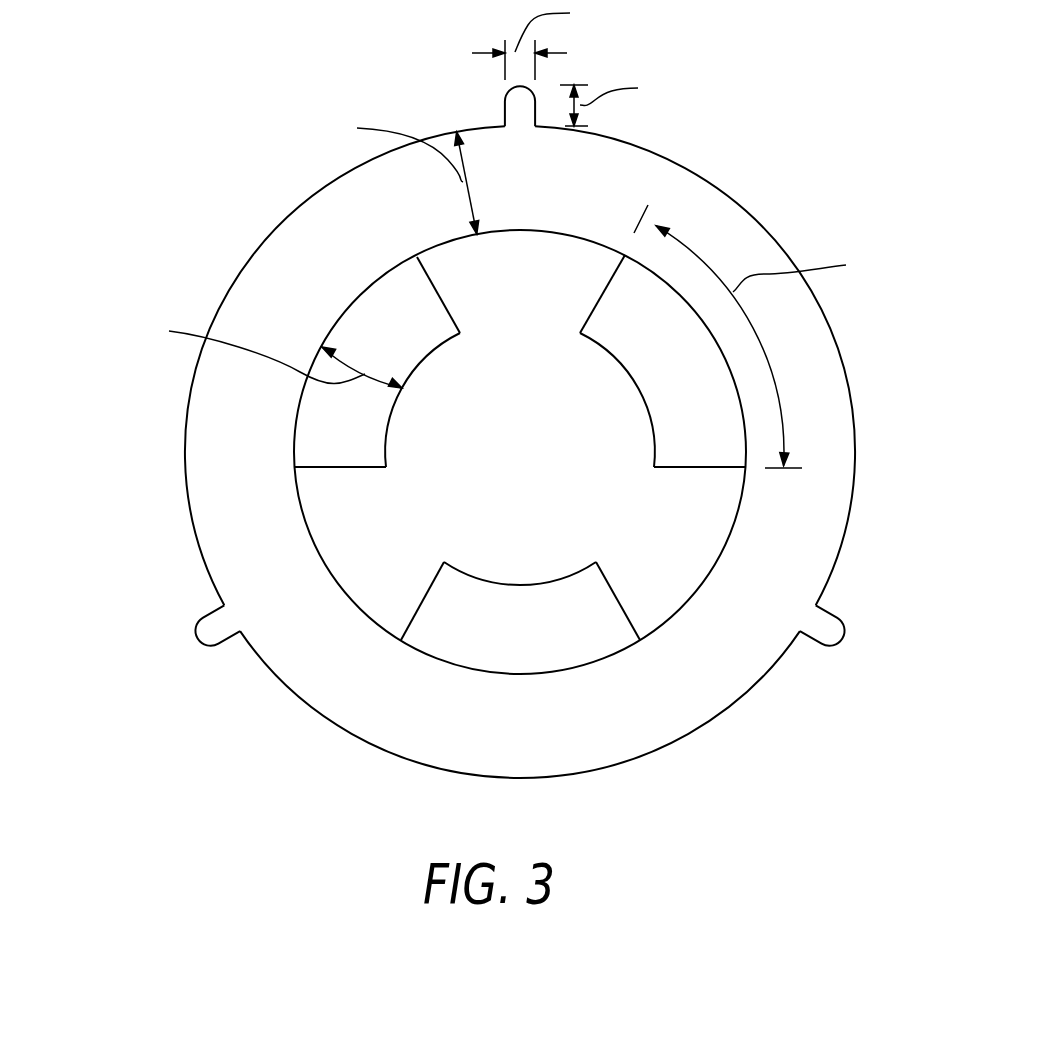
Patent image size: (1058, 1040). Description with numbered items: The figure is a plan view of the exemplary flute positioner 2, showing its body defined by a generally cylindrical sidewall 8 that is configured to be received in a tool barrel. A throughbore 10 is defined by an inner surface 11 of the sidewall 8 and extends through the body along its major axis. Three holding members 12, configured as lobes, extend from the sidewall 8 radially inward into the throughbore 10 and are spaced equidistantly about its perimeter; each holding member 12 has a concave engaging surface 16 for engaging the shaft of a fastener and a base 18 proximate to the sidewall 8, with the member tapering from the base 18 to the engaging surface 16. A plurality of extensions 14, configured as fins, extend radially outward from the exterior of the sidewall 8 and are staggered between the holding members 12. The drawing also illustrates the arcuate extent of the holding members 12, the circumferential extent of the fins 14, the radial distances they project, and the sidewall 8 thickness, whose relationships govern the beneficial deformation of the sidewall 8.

The flute positioner 2 is at (147, 413).
The sidewall 8 is at (348, 223).
The throughbore 10 is at (537, 457).
The inner surface 11 is at (730, 538).
The holding member 12 is at (346, 436).
The extension 14 is at (503, 104).
The engaging surface 16 is at (388, 434).
The base 18 is at (468, 531).